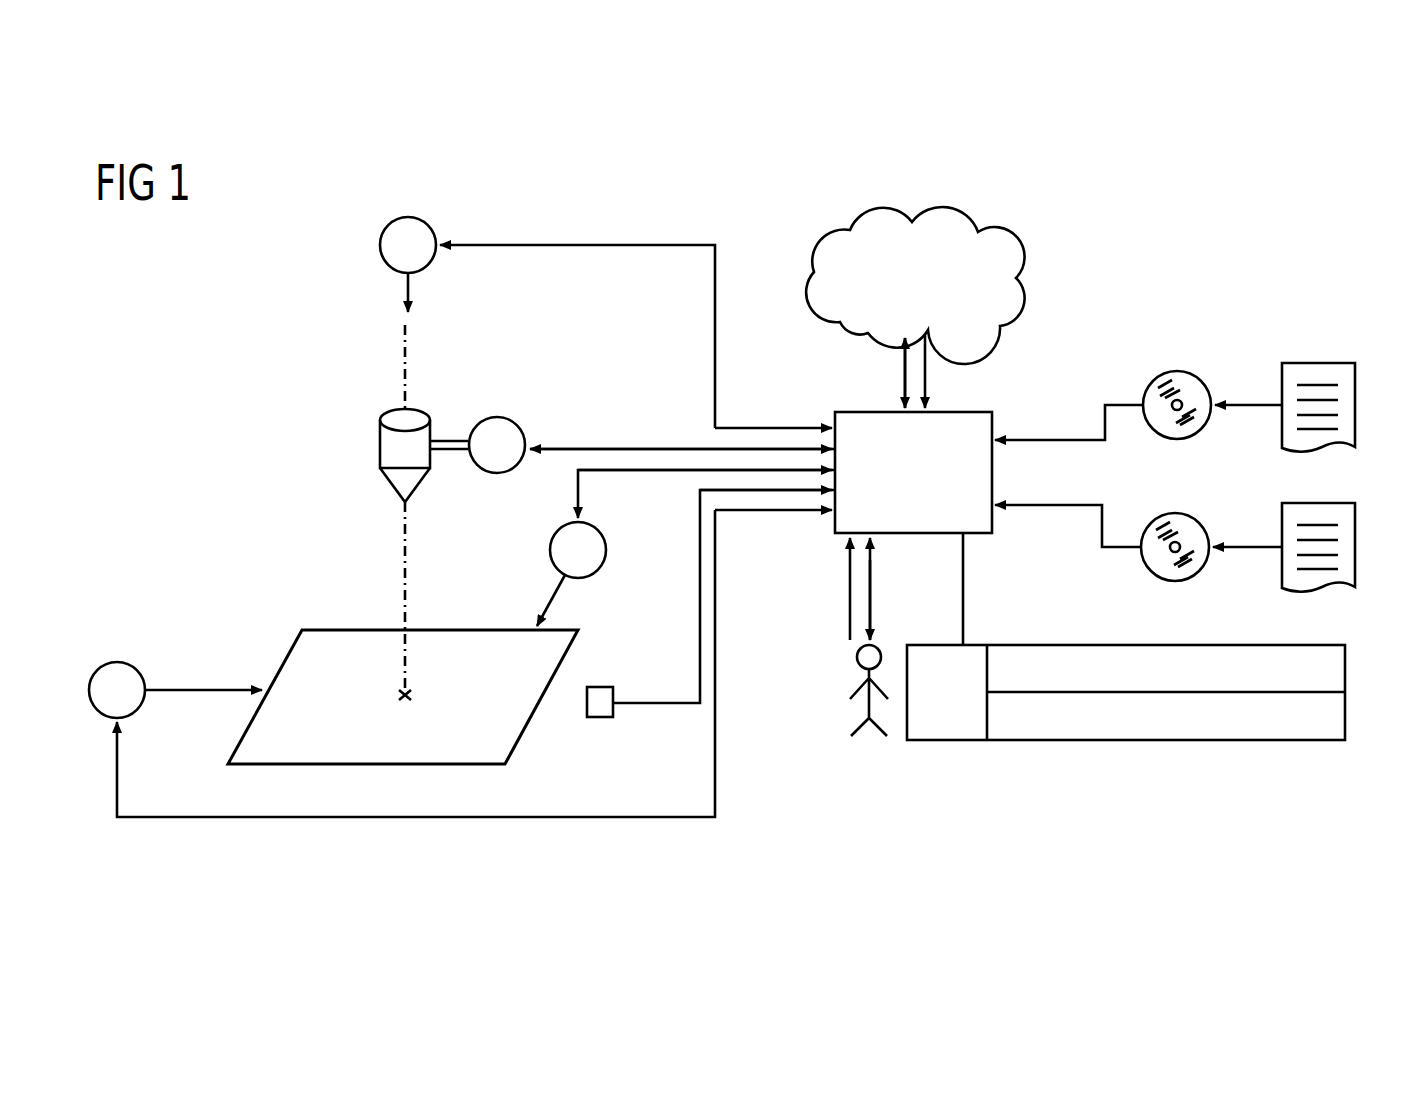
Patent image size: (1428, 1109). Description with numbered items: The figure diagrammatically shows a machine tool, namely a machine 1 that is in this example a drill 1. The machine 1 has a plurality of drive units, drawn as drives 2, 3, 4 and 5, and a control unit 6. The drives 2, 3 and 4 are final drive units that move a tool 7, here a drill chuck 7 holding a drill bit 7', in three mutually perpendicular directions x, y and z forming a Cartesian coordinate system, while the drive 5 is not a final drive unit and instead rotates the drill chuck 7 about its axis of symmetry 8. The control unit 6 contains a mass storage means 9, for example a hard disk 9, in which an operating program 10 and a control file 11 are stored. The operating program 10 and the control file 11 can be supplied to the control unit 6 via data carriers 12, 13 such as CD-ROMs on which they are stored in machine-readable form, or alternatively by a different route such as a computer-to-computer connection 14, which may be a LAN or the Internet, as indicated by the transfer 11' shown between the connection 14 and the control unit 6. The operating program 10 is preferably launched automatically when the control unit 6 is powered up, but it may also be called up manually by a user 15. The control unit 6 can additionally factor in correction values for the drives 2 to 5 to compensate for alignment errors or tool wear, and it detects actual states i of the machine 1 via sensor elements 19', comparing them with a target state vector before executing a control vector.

The machine 1 is at (213, 352).
The drive unit 2 is at (117, 662).
The drive unit 3 is at (607, 550).
The drive unit 4 is at (380, 245).
The drive unit 5 is at (497, 417).
The control unit 6 is at (912, 535).
The tool 7 is at (395, 396).
The drill bit 7' is at (386, 494).
The axis of symmetry 8 is at (403, 661).
The mass storage means 9 is at (970, 742).
The operating program 10 is at (1356, 410).
The control file 11 is at (1319, 547).
The control file via internet 11' is at (964, 371).
The data carrier 12 is at (1177, 371).
The data carrier 13 is at (1171, 581).
The computer-to-computer connection 14 is at (1024, 268).
The user 15 is at (858, 702).
The sensor elements 19' is at (711, 637).